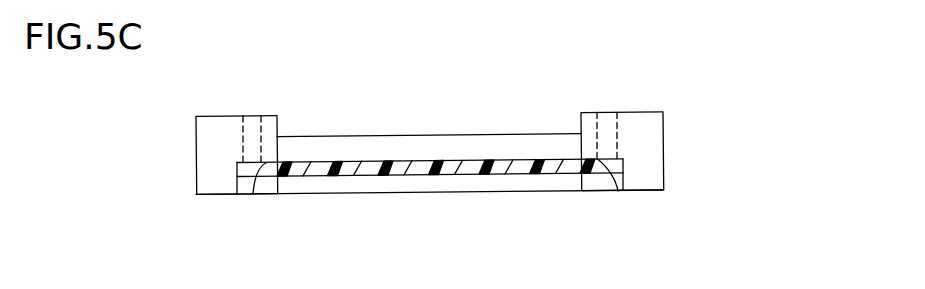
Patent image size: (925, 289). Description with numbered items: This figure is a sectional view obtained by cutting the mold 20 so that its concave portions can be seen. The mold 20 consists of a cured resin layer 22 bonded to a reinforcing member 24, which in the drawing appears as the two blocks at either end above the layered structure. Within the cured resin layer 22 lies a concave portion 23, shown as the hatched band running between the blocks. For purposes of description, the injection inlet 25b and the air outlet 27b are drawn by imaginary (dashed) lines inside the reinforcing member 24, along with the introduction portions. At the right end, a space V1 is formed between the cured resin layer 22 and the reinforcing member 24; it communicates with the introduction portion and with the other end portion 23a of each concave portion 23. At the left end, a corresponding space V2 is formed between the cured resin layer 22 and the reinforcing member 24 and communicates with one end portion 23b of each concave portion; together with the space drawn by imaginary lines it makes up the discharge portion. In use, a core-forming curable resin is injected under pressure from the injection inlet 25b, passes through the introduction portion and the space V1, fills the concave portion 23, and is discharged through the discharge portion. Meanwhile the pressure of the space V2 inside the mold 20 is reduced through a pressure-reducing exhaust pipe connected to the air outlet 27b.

The mold 20 is at (482, 124).
The cured resin layer 22 is at (370, 171).
The concave portion 23 is at (478, 186).
The other end portion of the concave portion 23a is at (603, 174).
The one end portion of the concave portion 23b is at (250, 177).
The reinforcing member 24 is at (652, 152).
The injection inlet 25b is at (606, 120).
The air outlet 27b is at (252, 122).
The space V1 is at (618, 189).
The space V2 is at (253, 192).